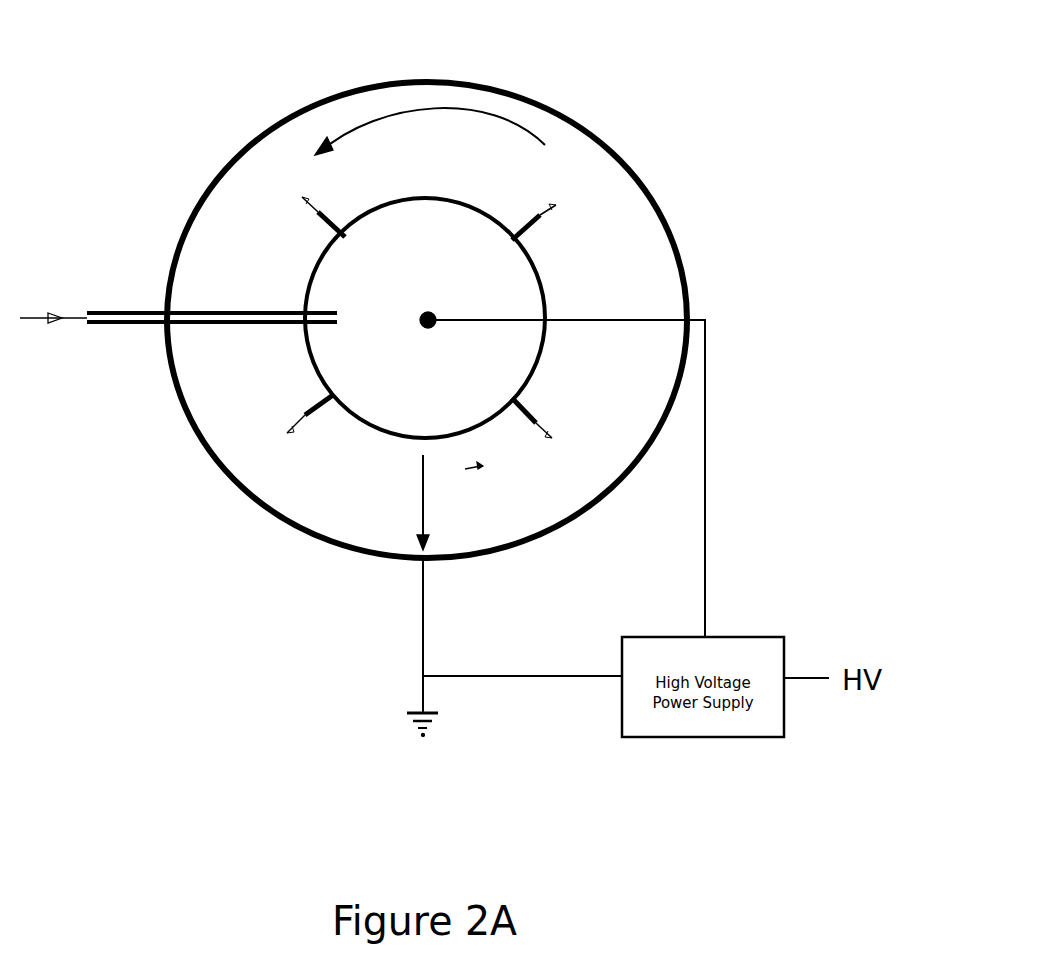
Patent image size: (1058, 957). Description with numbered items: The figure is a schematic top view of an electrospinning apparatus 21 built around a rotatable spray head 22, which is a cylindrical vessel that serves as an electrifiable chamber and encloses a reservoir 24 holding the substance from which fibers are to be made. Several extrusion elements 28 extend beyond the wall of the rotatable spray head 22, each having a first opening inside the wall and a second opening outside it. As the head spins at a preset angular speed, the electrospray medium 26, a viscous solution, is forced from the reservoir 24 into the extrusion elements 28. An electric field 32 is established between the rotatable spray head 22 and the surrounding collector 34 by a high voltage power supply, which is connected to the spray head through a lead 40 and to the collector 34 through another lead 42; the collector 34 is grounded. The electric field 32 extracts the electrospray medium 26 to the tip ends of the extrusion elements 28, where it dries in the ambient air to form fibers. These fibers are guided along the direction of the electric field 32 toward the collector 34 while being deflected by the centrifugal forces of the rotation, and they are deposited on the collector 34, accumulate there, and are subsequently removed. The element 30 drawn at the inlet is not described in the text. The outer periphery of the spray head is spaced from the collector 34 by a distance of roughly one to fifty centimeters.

The electrospinning apparatus 21 is at (635, 85).
The rotatable spray head 22 is at (583, 267).
The reservoir 24 is at (375, 407).
The electrospray medium 26 is at (68, 321).
The extrusion elements 28 is at (332, 213).
The sample inlet needle 30 is at (208, 274).
The electric field 32 is at (419, 502).
The collector 34 is at (347, 548).
The lead 40 is at (708, 502).
The lead 42 is at (508, 674).